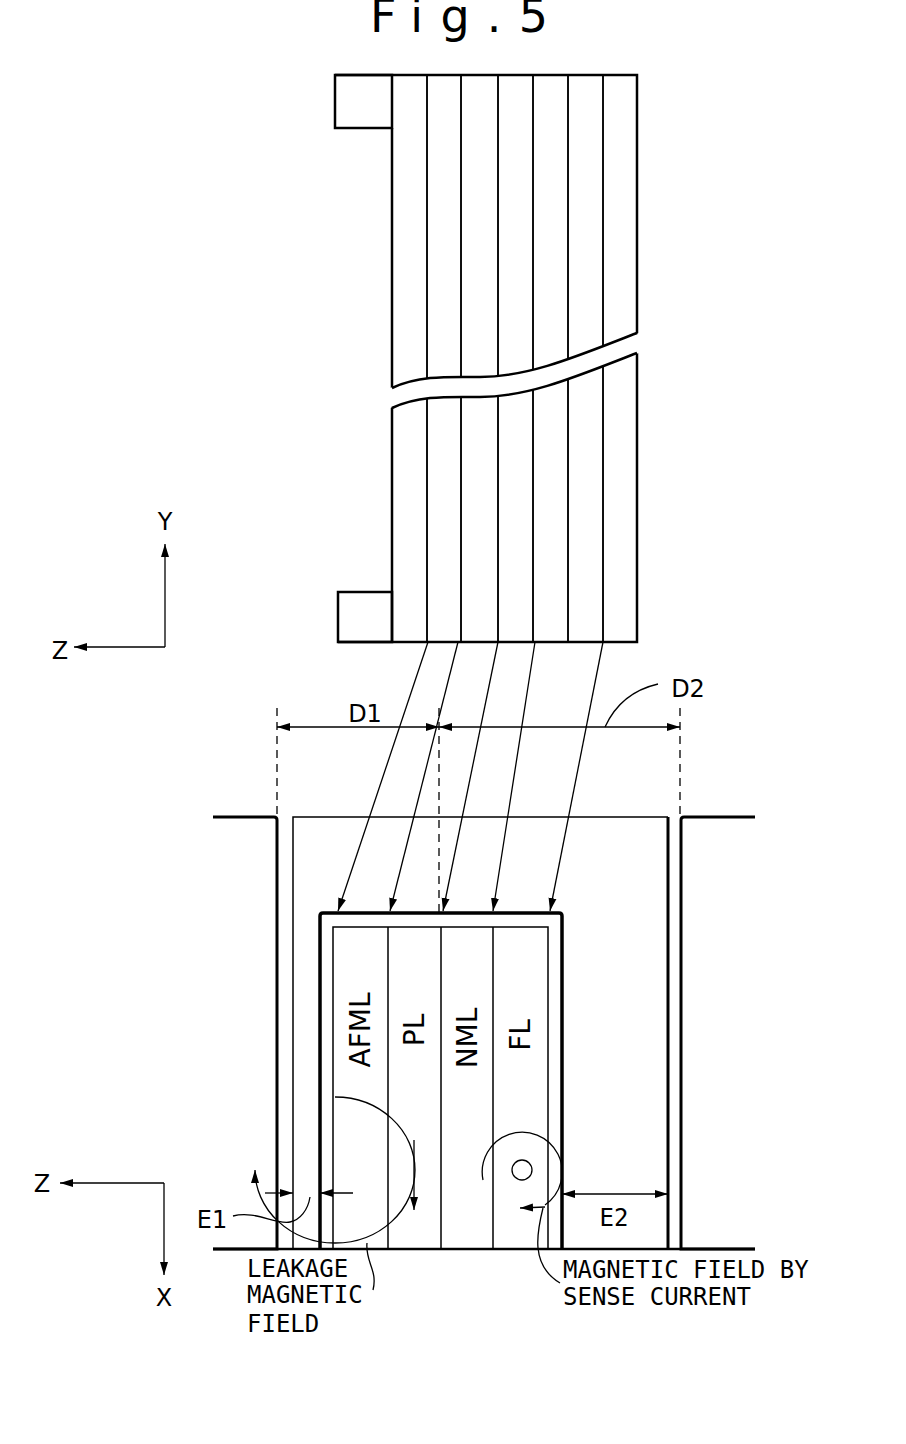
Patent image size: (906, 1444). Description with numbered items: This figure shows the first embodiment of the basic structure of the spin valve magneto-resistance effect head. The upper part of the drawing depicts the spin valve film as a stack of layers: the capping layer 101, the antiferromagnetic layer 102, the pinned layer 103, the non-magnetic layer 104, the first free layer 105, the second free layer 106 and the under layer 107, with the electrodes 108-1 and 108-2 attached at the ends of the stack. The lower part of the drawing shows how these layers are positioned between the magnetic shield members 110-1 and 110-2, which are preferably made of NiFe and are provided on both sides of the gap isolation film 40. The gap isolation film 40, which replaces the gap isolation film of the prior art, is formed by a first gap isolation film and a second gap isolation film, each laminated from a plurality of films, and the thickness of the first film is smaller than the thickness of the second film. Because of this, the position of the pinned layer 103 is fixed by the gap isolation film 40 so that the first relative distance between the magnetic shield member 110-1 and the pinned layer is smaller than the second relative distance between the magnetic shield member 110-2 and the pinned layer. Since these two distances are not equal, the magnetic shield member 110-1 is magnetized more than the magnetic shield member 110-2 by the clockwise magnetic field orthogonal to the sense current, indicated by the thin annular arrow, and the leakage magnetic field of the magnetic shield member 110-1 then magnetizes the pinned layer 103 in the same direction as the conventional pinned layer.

The capping layer 101 is at (405, 148).
The antiferromagnetic layer 102 is at (447, 297).
The pinned layer 103 is at (475, 427).
The non-magnetic layer 104 is at (517, 463).
The first free layer 105 is at (553, 502).
The second free layer 106 is at (588, 535).
The under layer 107 is at (620, 577).
The electrode 108-1 is at (335, 100).
The electrode 108-2 is at (338, 616).
The magnetic shield member 110-1 is at (232, 816).
The magnetic shield member 110-2 is at (707, 816).
The gap isolation film 40 is at (630, 816).